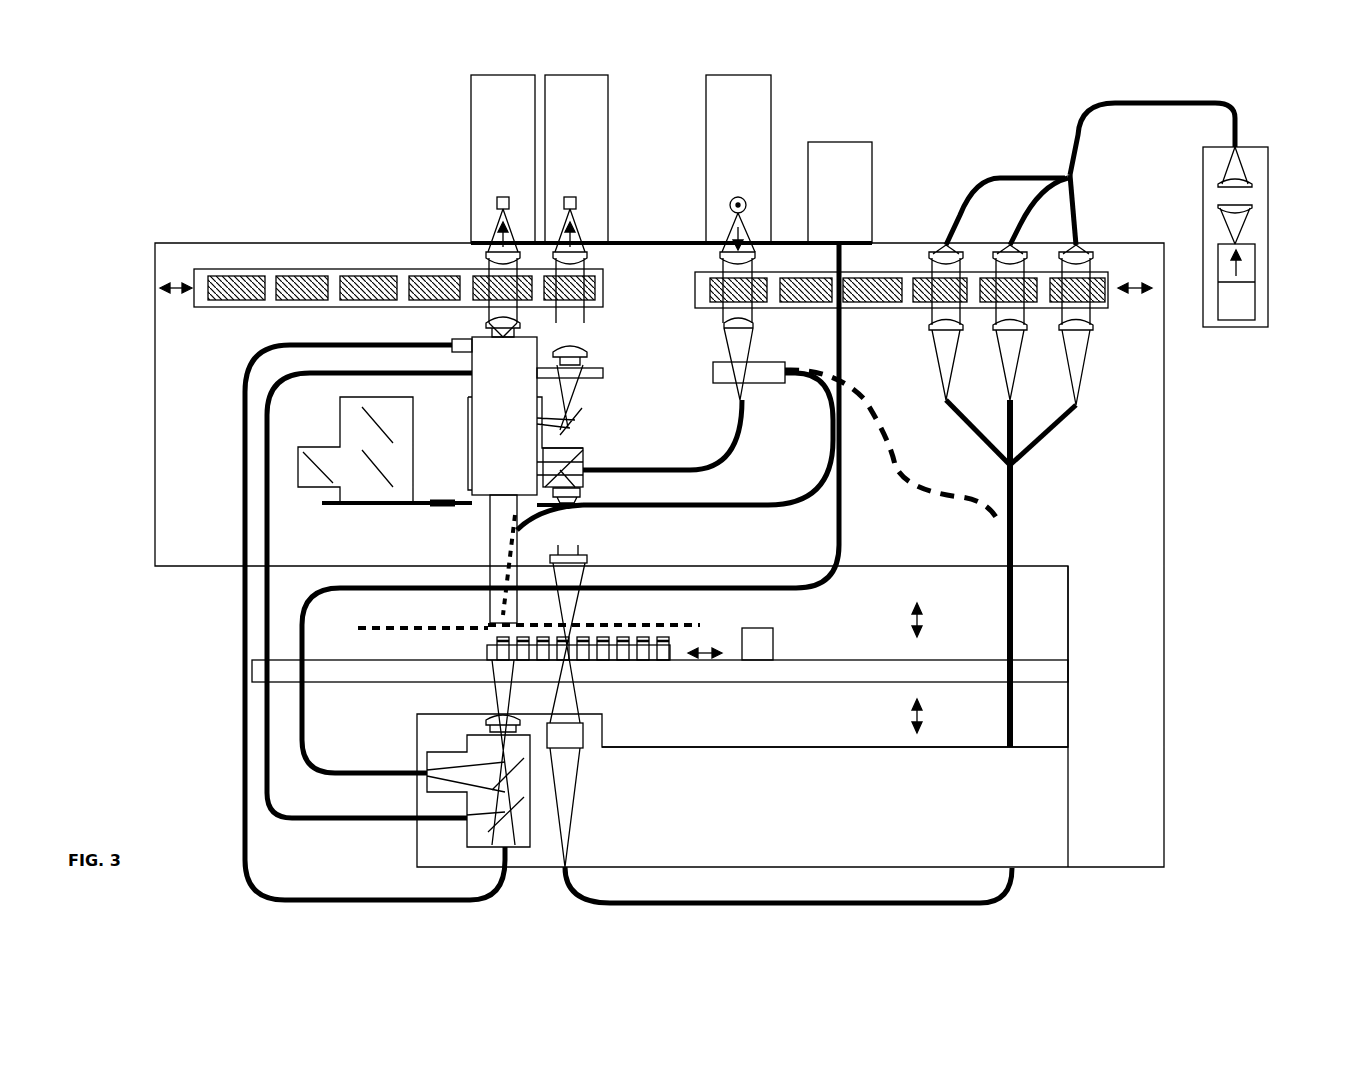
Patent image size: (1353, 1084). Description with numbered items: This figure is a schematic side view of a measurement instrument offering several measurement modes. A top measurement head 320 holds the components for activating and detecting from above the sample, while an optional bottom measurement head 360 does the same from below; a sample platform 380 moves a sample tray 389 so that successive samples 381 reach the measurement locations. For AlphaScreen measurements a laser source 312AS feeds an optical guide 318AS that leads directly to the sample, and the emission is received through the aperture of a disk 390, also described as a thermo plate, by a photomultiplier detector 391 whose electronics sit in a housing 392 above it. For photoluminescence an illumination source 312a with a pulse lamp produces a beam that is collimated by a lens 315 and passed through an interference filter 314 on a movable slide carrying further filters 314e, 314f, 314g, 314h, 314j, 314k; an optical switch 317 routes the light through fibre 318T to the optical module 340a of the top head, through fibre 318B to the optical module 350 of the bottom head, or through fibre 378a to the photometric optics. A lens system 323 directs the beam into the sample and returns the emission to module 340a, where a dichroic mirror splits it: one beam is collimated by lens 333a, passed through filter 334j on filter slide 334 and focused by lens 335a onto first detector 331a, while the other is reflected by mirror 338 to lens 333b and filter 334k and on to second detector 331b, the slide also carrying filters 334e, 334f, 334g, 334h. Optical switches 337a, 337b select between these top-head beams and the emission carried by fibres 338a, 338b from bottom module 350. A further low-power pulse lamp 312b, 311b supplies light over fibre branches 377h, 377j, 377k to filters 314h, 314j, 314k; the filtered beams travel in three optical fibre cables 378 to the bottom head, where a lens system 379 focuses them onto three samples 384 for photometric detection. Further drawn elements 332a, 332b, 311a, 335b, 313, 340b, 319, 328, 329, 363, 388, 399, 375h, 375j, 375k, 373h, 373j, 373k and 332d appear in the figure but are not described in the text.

The top measurement head 320 is at (155, 400).
The excitation light source module 332a is at (470, 112).
The excitation light source module 332b is at (608, 118).
The illumination source 312a is at (771, 118).
The laser source 312AS is at (868, 142).
The further pulse lamp 312b is at (1268, 186).
The pulse lamp 311b is at (1255, 262).
The first detector 331a is at (497, 204).
The second detector 331b is at (578, 203).
The light source 311a is at (747, 203).
The lens 335a is at (488, 256).
The collimating lens 335b is at (588, 257).
The lens 315 is at (756, 258).
The excitation filter bar 334 is at (228, 312).
The excitation filter 334e is at (228, 276).
The excitation filter 334f is at (290, 276).
The excitation filter 334g is at (357, 276).
The excitation filter 334h is at (420, 276).
The interference filter 334j is at (478, 276).
The second interference filter 334k is at (595, 290).
The interference filter 314 is at (1108, 312).
The filter 314e is at (710, 290).
The filter 314f is at (790, 278).
The filter 314g is at (858, 278).
The filter 314h is at (925, 304).
The filter 314j is at (1000, 306).
The filter 314k is at (1095, 280).
The lens 333a is at (525, 327).
The lens 333b is at (586, 354).
The focusing lens 313 is at (764, 326).
The housing 392 is at (470, 448).
The optical switch 337a is at (455, 340).
The optical switch 337b is at (603, 373).
The mirror 338 is at (583, 415).
The optical module 340a is at (588, 483).
The beam splitter 340b is at (342, 438).
The optical fibre 338a is at (243, 420).
The optical fibre 338b is at (272, 516).
The optical fiber 329 is at (438, 505).
The lens system 323 is at (488, 520).
The detector 391 is at (488, 578).
The optical fiber 319 is at (585, 506).
The optical fiber 328 is at (557, 515).
The optical switch 317 is at (715, 382).
The optical fibre 318T is at (745, 436).
The optical guide 318AS is at (735, 500).
The optical fibre 318B is at (830, 514).
The optical fibre 378a is at (918, 490).
The fibre branch 377h is at (952, 224).
The fibre branch 377j is at (1005, 223).
The fibre branch 377k is at (1080, 226).
The lens 375h is at (938, 256).
The lens 375j is at (1003, 256).
The lens 375k is at (1085, 258).
The lens 373h is at (928, 334).
The lens 373j is at (1025, 334).
The lens 373k is at (1094, 334).
The optical fibre cables 378 is at (1013, 506).
The sample platform 380 is at (852, 658).
The bottom measurement head 360 is at (728, 748).
The motor 399 is at (774, 644).
The sample tray 389 is at (668, 650).
The sample 381 is at (488, 656).
The samples 384 is at (575, 662).
The scan line 388 is at (640, 633).
The disk 390 is at (470, 630).
The light source 332d is at (588, 562).
The optical module 350 is at (470, 835).
The lens 363 is at (485, 716).
The lens system 379 is at (588, 750).